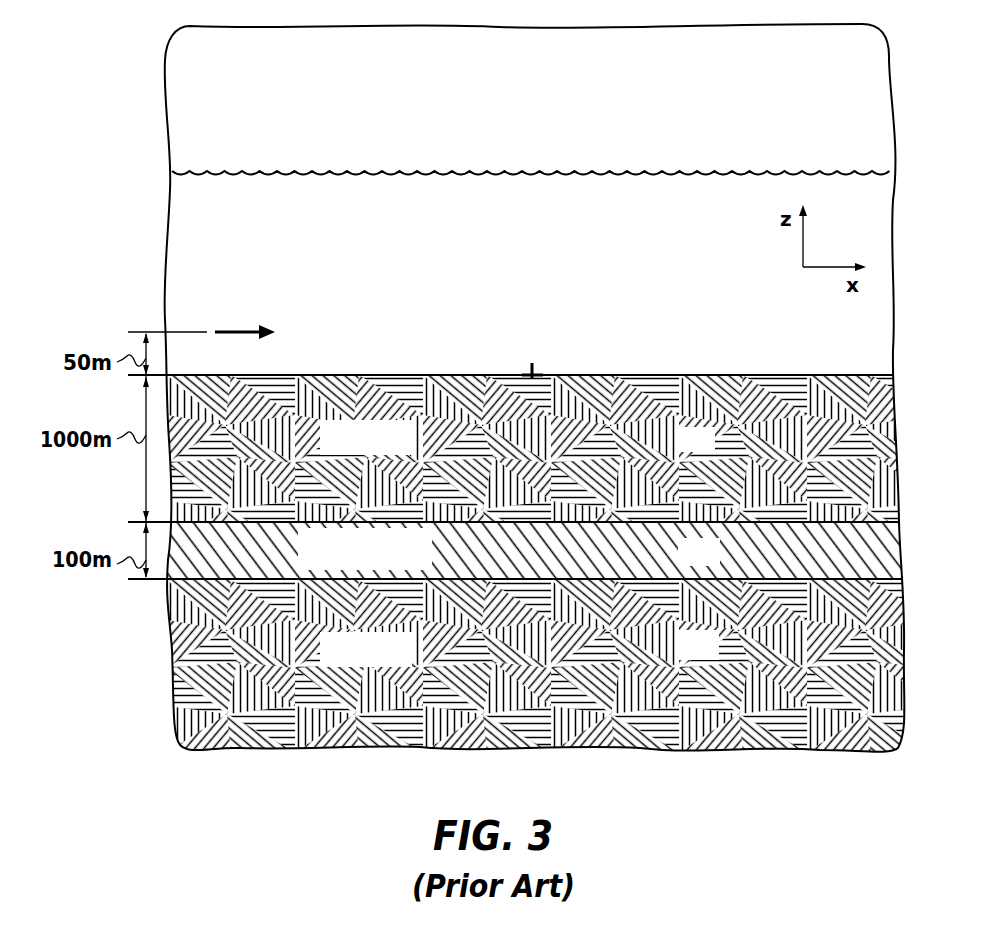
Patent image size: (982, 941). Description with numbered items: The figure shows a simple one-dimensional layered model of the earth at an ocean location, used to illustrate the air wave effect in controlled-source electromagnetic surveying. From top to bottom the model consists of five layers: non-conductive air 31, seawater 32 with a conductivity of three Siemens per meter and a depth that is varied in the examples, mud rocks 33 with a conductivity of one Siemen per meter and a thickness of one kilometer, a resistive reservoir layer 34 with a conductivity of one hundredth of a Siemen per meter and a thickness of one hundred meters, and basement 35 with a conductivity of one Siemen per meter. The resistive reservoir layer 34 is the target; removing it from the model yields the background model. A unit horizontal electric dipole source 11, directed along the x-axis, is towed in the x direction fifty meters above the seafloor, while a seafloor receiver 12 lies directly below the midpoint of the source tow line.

The horizontal electric dipole source 11 is at (230, 325).
The seafloor receiver 12 is at (537, 367).
The air 31 is at (531, 136).
The seawater 32 is at (508, 260).
The mud rocks 33 is at (531, 461).
The resistive reservoir layer 34 is at (524, 551).
The basement 35 is at (551, 666).